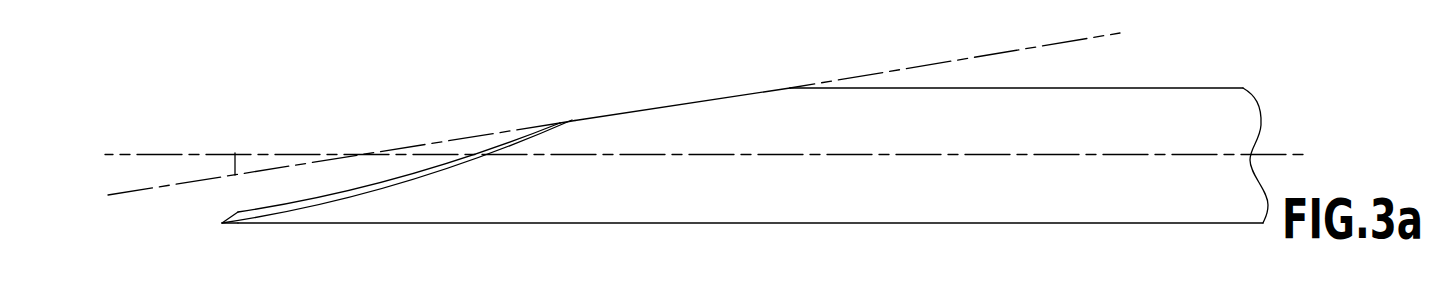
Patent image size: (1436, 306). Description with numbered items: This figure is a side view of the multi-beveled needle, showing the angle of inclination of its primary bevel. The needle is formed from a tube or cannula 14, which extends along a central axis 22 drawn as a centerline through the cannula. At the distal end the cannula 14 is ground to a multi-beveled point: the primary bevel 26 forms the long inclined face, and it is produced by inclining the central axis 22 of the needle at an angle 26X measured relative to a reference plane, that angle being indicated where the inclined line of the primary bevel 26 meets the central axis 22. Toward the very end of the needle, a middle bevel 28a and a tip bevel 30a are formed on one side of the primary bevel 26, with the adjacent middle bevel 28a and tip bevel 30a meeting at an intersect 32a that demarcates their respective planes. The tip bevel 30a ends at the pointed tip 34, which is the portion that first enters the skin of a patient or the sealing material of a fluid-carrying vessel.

The cannula 14 is at (1113, 100).
The central axis 22 is at (171, 154).
The primary bevel 26 is at (662, 108).
The angle of inclination of the primary bevel 26X is at (232, 168).
The middle bevel 28a is at (493, 152).
The tip bevel 30a is at (308, 203).
The intersect 32a is at (382, 184).
The pointed tip 34 is at (223, 224).